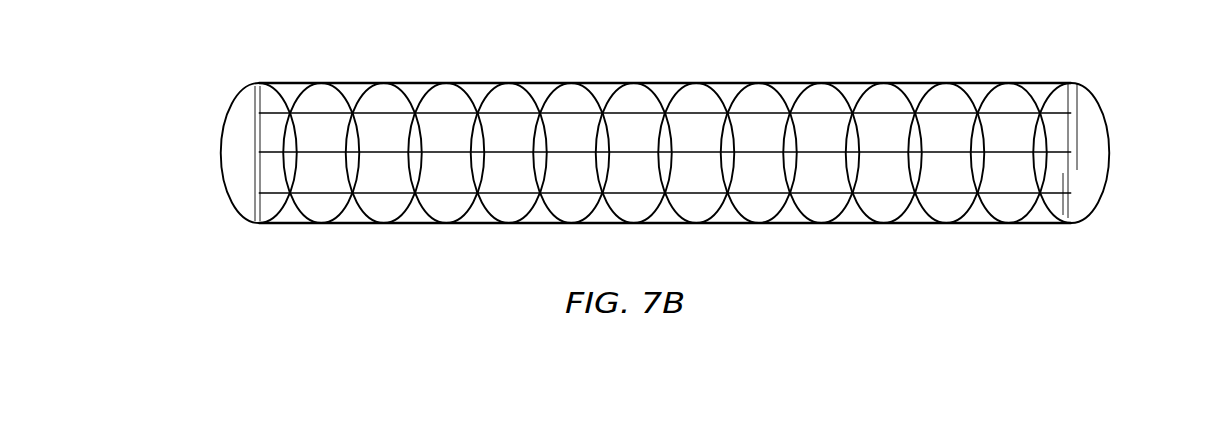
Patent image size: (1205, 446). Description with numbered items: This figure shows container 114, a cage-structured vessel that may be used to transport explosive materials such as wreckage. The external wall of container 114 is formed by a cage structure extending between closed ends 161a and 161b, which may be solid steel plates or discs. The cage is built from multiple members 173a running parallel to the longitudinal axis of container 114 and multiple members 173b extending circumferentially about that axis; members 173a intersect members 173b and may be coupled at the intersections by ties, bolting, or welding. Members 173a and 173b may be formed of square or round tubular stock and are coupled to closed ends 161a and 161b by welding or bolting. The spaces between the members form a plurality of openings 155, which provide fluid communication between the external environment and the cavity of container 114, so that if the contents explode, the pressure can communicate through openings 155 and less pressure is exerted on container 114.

The container 114 is at (202, 70).
The openings 155 is at (577, 100).
The members extending parallel to longitudinal axis 173a is at (830, 113).
The members extending circumferentially 173b is at (928, 205).
The closed end 161a is at (230, 138).
The closed end 161b is at (1083, 100).